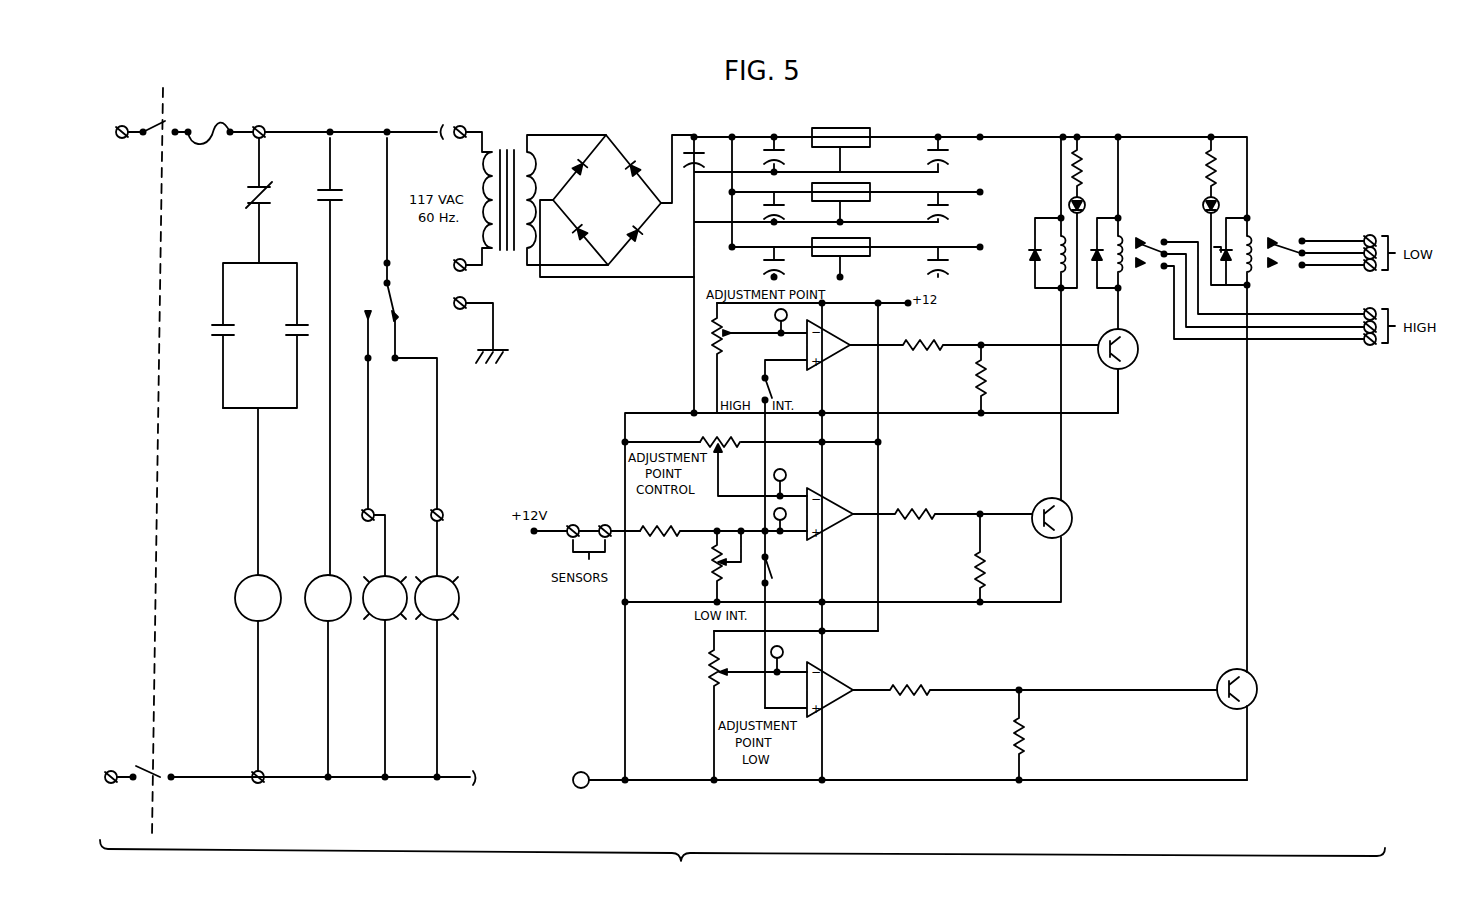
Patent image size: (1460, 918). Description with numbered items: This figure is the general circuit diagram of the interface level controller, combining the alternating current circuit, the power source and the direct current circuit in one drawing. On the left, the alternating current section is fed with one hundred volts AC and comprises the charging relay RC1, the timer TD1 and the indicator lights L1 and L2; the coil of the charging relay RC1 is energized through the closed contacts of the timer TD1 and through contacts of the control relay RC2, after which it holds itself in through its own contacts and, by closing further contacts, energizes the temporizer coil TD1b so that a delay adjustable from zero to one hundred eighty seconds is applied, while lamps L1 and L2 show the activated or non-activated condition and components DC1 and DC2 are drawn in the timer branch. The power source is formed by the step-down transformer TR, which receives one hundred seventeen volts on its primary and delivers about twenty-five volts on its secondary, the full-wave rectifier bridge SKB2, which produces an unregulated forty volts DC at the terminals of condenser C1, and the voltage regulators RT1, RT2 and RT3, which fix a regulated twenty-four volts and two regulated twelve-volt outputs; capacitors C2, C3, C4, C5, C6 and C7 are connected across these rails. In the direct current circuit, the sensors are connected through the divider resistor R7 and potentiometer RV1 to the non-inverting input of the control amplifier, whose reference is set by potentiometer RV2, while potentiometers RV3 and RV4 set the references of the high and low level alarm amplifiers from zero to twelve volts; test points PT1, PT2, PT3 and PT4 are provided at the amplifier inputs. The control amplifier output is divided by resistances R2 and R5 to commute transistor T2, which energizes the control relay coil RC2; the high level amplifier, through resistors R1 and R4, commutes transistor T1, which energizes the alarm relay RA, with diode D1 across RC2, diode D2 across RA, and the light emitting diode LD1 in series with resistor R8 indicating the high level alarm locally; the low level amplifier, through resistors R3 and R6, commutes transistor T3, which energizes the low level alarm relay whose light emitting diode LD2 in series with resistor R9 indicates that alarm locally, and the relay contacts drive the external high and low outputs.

The timer TD1 is at (243, 200).
The time delay relay coil TD1b is at (328, 676).
The charging relay RC1 is at (336, 454).
The capacitor DC1 is at (265, 335).
The capacitor DC2 is at (217, 335).
The indicator light L1 is at (385, 646).
The indicator light L2 is at (437, 649).
The step-down transformer TR is at (537, 186).
The rectifier bridge SKB2 is at (617, 206).
The condenser C1 is at (780, 154).
The capacitor C2 is at (780, 207).
The capacitor C3 is at (780, 262).
The capacitor C4 is at (944, 154).
The capacitor C5 is at (944, 207).
The capacitor C6 is at (944, 262).
The filter capacitor C7 is at (700, 157).
The voltage regulator RT1 is at (841, 140).
The voltage regulator RT2 is at (840, 202).
The voltage regulator RT3 is at (840, 257).
The potentiometer RV1 is at (710, 566).
The potentiometer RV2 is at (753, 466).
The potentiometer RV3 is at (746, 358).
The potentiometer RV4 is at (741, 705).
The test point PT1 is at (766, 321).
The test point PT2 is at (783, 474).
The test point PT3 is at (791, 515).
The test point PT4 is at (789, 655).
The resistor R1 is at (915, 335).
The resistance R2 is at (916, 504).
The resistor R3 is at (936, 680).
The resistor R4 is at (968, 379).
The resistance R5 is at (967, 558).
The resistor R6 is at (1005, 735).
The voltage divider R7 is at (723, 522).
The resistor R8 is at (1085, 167).
The resistor R9 is at (1219, 167).
The transistor T1 is at (1118, 350).
The transistor T2 is at (1052, 413).
The transistor T3 is at (1237, 532).
The LED diode LD1 is at (1085, 236).
The LED diode LD2 is at (1225, 234).
The diode D1 is at (1025, 245).
The diode D2 is at (1091, 247).
The control relay RC2 is at (1063, 223).
The alarm relay RA is at (1230, 238).